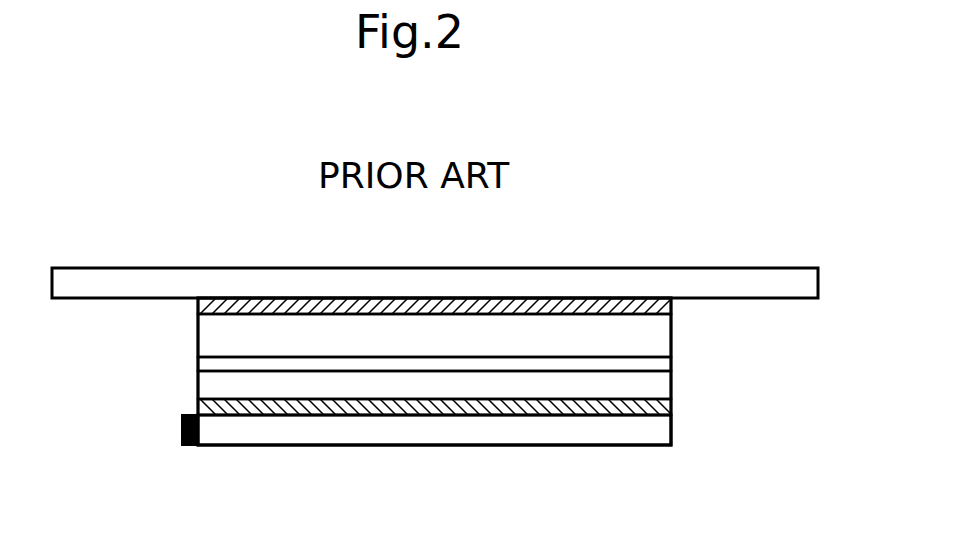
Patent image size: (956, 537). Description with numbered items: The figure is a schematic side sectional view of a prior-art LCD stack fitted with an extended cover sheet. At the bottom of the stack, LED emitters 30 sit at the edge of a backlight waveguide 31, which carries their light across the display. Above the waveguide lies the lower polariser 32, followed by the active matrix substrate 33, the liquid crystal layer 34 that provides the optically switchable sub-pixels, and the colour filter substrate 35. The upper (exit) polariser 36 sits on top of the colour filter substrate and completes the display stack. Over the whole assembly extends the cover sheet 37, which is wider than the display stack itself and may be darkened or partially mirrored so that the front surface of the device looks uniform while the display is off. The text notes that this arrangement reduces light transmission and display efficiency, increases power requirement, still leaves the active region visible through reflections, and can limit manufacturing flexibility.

The LED emitters 30 is at (182, 430).
The backlight waveguide 31 is at (577, 430).
The lower polariser 32 is at (647, 405).
The active matrix substrate 33 is at (213, 385).
The liquid crystal layer 34 is at (213, 363).
The colour filter substrate 35 is at (218, 331).
The upper (exit) polariser 36 is at (662, 304).
The extended cover sheet 37 is at (736, 285).